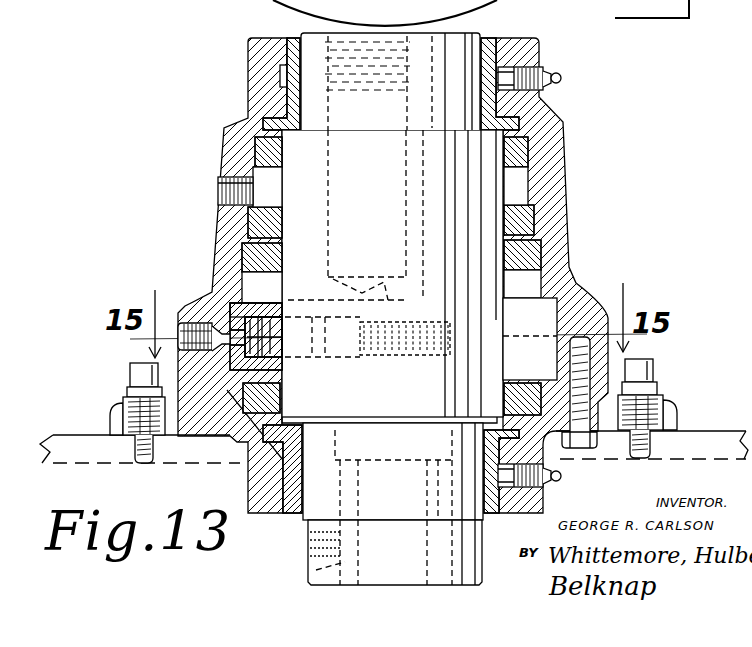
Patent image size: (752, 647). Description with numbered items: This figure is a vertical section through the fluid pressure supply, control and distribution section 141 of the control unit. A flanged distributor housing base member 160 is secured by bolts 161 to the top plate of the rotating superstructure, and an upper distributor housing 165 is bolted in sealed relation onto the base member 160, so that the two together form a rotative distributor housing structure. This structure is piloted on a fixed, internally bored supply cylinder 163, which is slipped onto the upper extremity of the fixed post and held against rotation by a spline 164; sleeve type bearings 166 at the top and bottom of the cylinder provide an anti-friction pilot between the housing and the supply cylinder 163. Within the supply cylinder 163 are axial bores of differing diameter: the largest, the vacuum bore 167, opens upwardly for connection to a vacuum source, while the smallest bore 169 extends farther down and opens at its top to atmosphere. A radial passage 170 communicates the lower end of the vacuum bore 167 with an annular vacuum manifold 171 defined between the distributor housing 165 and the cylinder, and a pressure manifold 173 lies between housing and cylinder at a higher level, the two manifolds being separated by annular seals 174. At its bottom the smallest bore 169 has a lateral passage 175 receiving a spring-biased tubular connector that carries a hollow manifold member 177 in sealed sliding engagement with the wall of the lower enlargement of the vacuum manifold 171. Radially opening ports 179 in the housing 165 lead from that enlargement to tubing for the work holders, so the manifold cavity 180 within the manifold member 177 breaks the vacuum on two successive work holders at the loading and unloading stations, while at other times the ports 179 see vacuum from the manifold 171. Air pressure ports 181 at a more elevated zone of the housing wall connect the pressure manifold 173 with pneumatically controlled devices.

The fluid pressure supply, control and distribution section 141 is at (400, 275).
The distributor housing base member 160 is at (394, 448).
The bolts 161 is at (653, 441).
The supply cylinder 163 is at (486, 208).
The spline 164 is at (311, 575).
The upper distributor housing 165 is at (248, 143).
The sleeve type bearings 166 is at (492, 46).
The vacuum bore 167 is at (330, 108).
The smallest bore 169 is at (507, 317).
The radial passage 170 is at (381, 303).
The annular vacuum manifold 171 is at (255, 323).
The pressure manifold 173 is at (269, 181).
The annular seals 174 is at (269, 223).
The lateral passage 175 is at (356, 361).
The hollow manifold member 177 is at (262, 315).
The ports 179 is at (183, 318).
The manifold cavity 180 is at (281, 404).
The air pressure ports 181 is at (237, 200).